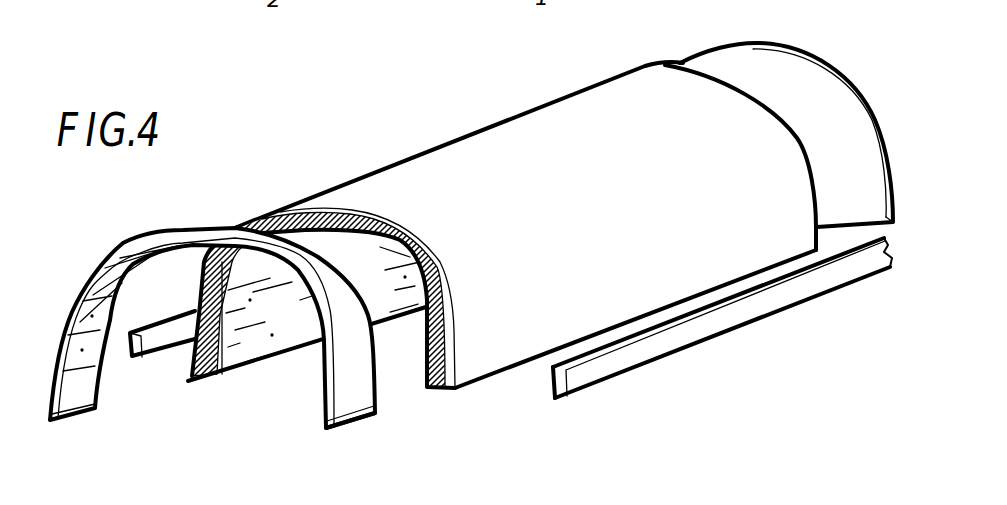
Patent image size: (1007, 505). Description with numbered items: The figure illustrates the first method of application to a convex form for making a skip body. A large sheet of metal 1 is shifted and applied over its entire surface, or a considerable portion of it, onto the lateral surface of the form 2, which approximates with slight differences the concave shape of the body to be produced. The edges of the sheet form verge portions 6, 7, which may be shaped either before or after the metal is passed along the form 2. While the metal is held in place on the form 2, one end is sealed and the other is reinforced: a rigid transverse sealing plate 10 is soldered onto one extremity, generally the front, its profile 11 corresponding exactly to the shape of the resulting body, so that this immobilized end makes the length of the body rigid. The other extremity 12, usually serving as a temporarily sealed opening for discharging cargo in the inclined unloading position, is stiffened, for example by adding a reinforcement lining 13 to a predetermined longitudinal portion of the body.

The sheet of metal 1 is at (474, 353).
The form 2 is at (228, 360).
The verge portion 6 is at (158, 343).
The verge portion 7 is at (680, 336).
The sealing plate 10 is at (822, 82).
The profile 11 is at (895, 182).
The other extremity 12 is at (170, 217).
The reinforcement lining 13 is at (343, 412).